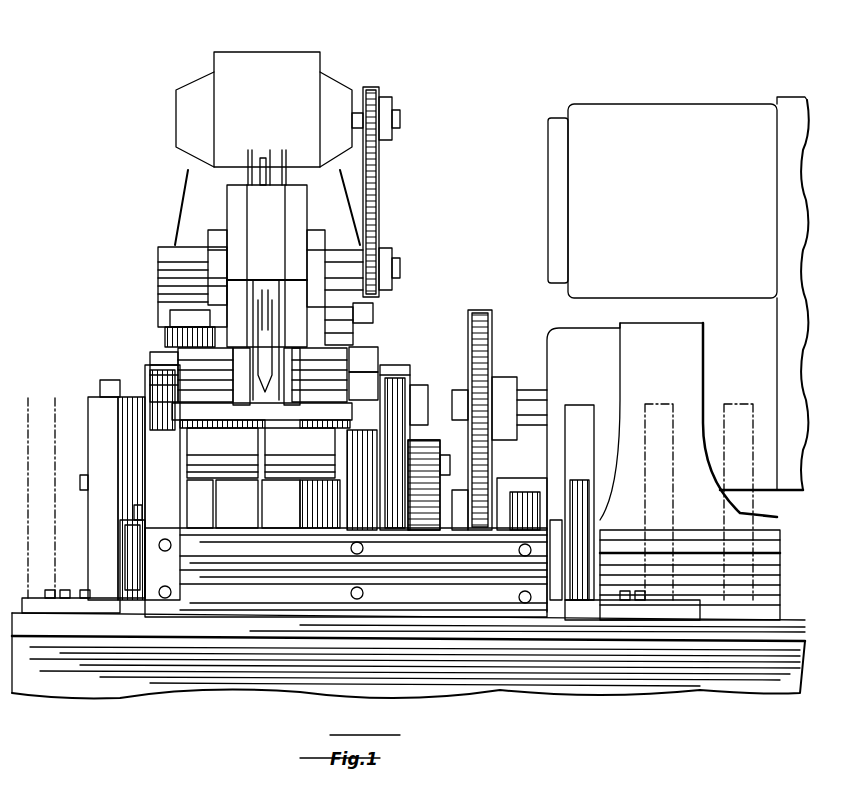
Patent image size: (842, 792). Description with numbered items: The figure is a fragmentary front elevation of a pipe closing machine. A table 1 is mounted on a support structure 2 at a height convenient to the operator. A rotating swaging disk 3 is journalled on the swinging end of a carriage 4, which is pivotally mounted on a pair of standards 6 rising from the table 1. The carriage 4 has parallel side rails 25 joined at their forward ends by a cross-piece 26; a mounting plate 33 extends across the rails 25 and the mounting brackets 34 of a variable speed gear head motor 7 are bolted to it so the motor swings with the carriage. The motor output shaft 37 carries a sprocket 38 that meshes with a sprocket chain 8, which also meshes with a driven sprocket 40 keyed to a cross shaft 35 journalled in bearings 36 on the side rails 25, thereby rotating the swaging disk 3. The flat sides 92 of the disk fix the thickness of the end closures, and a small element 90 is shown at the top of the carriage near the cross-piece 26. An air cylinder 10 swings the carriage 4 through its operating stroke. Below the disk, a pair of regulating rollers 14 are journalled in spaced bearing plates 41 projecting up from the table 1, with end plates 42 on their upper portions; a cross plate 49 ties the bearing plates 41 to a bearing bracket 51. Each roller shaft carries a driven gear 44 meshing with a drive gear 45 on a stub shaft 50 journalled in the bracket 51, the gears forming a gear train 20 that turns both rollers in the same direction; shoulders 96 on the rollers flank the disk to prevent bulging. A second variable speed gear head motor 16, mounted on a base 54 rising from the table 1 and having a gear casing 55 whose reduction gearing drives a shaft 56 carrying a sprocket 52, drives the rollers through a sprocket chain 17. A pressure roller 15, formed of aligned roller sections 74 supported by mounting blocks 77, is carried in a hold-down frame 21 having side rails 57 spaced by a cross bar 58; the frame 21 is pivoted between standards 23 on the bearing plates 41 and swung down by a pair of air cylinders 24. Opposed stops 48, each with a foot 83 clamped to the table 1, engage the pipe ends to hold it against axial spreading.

The table 1 is at (78, 625).
The support structure 2 is at (640, 670).
The swaging disk 3 is at (257, 171).
The carriage 4 is at (226, 206).
The standards 6 is at (355, 328).
The gear head motor 7 is at (260, 60).
The sprocket chain 8 is at (380, 170).
The air cylinder 10 is at (274, 508).
The regulating rollers 14 is at (212, 445).
The pressure roller 15 is at (198, 370).
The gear head motor 16 is at (680, 130).
The sprocket chain 17 is at (478, 305).
The gear train 20 is at (416, 527).
The hold-down frame 21 is at (158, 362).
The standards 23 is at (135, 405).
The air cylinders 24 is at (130, 541).
The side rails 25 is at (222, 222).
The cross-piece 26 is at (278, 198).
The mounting plate 33 is at (172, 287).
The mounting brackets 34 is at (160, 255).
The cross shaft 35 is at (400, 268).
The bearings 36 is at (200, 250).
The output shaft 37 is at (400, 118).
The sprocket 38 is at (388, 100).
The driven sprocket 40 is at (386, 258).
The bearing plates 41 is at (165, 475).
The end plates 42 is at (142, 447).
The driven gear 44 is at (430, 438).
The drive gear 45 is at (430, 526).
The stops 48 is at (86, 466).
The cross plate 49 is at (242, 602).
The stub shaft 50 is at (445, 522).
The bearing bracket 51 is at (520, 492).
The sprocket 52 is at (500, 392).
The base 54 is at (760, 583).
The gear casing 55 is at (592, 340).
The shaft 56 is at (547, 406).
The side rails 57 is at (380, 350).
The cross bar 58 is at (262, 440).
The roller sections 74 is at (205, 362).
The mounting blocks 77 is at (288, 408).
The foot 83 is at (35, 606).
The pin 90 is at (262, 170).
The flat sides 92 is at (284, 282).
The shoulders 96 is at (256, 470).